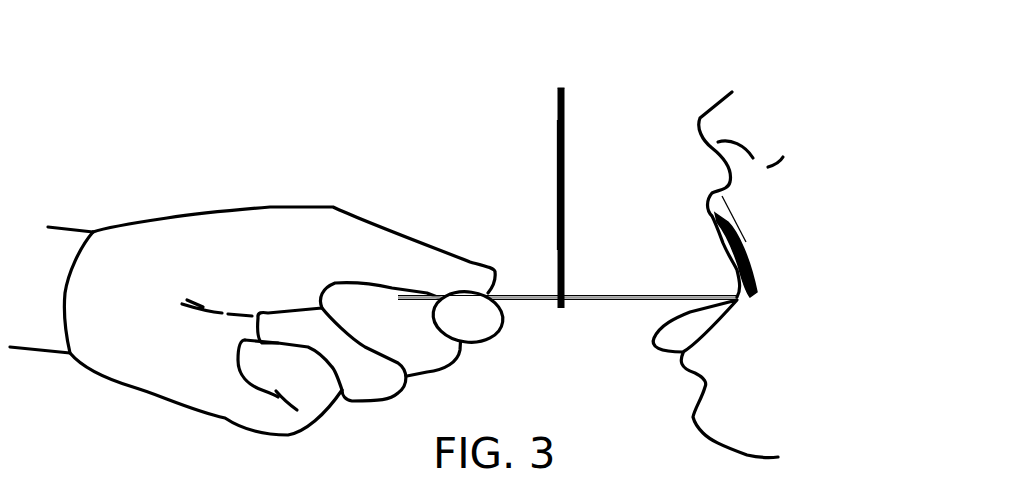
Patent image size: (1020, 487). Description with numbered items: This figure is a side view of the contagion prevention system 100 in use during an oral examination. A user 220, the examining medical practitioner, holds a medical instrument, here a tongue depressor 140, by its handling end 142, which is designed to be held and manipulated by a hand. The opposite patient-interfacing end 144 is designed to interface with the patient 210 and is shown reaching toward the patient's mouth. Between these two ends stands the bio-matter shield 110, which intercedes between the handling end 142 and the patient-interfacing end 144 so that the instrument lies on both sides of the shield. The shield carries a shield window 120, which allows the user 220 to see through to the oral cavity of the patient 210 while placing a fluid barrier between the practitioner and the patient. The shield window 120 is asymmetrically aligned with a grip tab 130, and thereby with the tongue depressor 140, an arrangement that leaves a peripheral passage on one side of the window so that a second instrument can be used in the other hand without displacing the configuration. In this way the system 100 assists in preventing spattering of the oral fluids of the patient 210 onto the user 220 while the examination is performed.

The contagion prevention system 100 is at (433, 124).
The bio-matter shield 110 is at (551, 84).
The shield window 120 is at (551, 165).
The grip tab 130 is at (528, 293).
The tongue depressor 140 is at (637, 300).
The handling end 142 is at (516, 319).
The patient-interfacing end 144 is at (708, 284).
The patient 210 is at (726, 86).
The user 220 is at (285, 193).